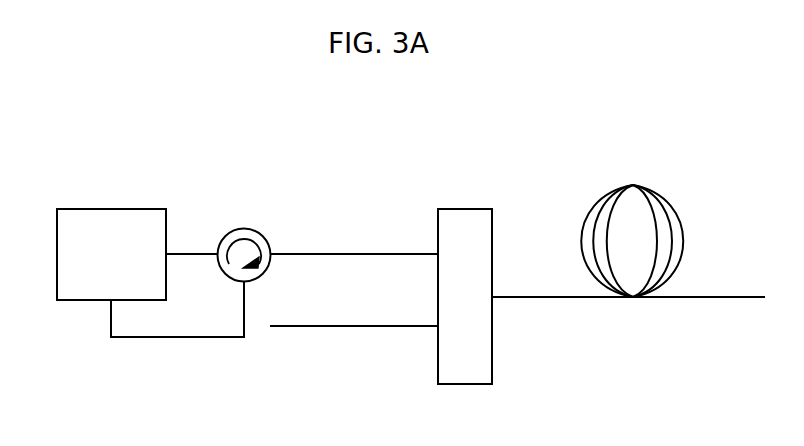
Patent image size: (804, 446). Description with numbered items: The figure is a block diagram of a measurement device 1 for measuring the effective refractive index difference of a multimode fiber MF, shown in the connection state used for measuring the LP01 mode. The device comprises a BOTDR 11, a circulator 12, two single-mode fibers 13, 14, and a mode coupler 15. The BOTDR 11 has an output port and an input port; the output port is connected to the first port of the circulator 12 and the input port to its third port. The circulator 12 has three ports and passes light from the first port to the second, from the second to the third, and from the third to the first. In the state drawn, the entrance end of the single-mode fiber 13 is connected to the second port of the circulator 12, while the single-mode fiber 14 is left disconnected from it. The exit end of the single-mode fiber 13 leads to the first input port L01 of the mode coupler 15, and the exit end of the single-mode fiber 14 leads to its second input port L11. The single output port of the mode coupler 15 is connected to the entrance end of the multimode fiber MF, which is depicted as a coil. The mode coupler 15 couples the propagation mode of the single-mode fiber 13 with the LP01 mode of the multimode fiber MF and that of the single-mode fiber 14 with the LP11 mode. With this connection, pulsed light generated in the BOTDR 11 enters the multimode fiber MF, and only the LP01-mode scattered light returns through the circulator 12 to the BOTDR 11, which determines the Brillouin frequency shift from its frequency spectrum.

The measurement device 1 is at (703, 89).
The BOTDR 11 is at (113, 207).
The circulator 12 is at (244, 227).
The single-mode fiber 13 is at (338, 252).
The single-mode fiber 14 is at (346, 328).
The mode coupler 15 is at (465, 207).
The first input port L01 is at (414, 240).
The second input port L11 is at (414, 309).
The multimode fiber MF is at (633, 184).